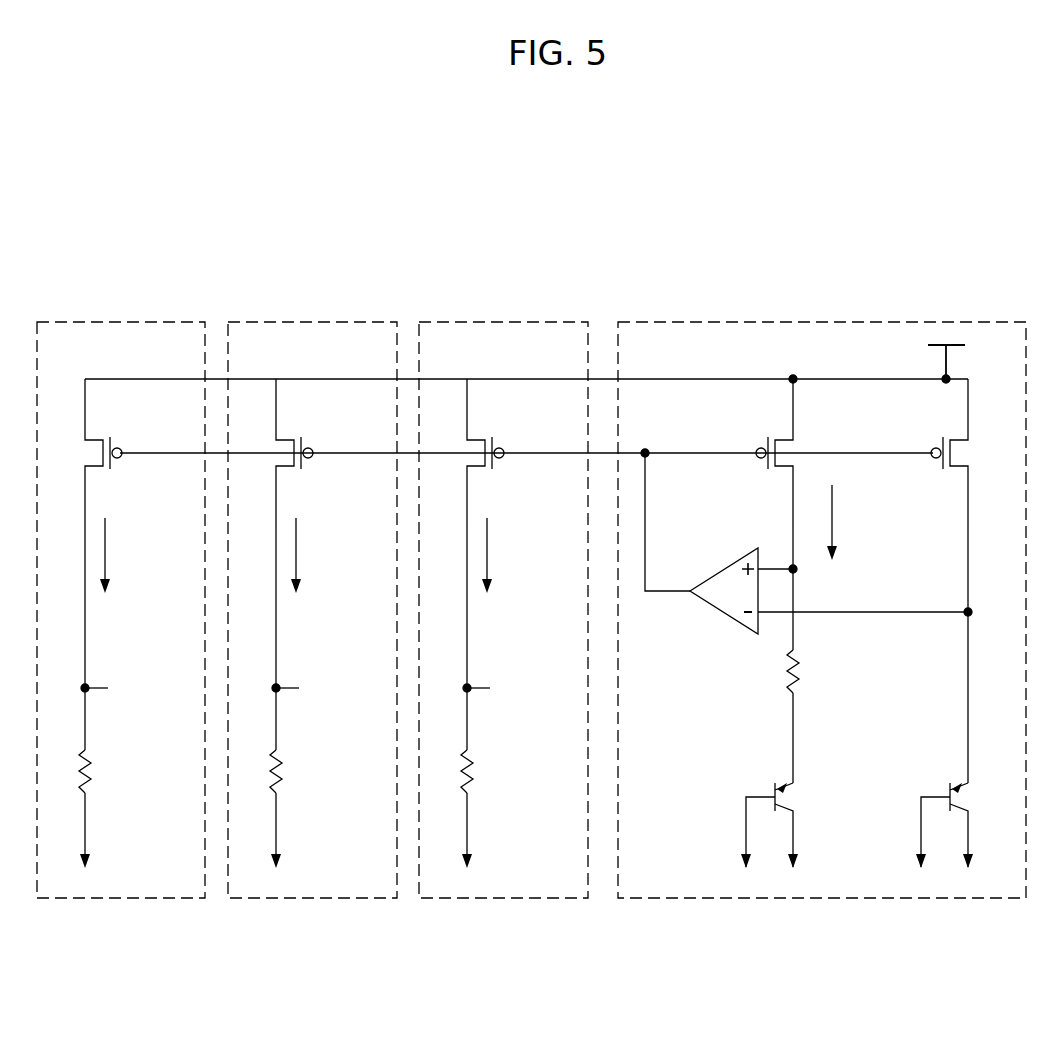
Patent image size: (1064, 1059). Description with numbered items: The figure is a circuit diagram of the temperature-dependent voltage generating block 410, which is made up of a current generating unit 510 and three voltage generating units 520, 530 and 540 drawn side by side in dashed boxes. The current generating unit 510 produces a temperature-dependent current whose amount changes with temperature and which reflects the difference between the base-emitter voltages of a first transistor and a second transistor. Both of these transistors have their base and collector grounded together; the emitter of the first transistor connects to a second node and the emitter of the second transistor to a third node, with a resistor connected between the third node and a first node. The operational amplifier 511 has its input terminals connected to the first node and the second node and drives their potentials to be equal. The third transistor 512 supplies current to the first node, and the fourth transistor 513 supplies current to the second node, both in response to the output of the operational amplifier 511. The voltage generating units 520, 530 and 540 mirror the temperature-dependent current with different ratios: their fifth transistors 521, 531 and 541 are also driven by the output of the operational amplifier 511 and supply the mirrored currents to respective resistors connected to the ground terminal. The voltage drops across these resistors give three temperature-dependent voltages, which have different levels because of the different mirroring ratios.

The temperature-dependent voltage generating block 410 is at (897, 237).
The current generating unit 510 is at (971, 322).
The operational amplifier 511 is at (722, 566).
The third transistor 512 is at (772, 453).
The fourth transistor 513 is at (948, 453).
The voltage generating unit 520 is at (532, 322).
The fifth transistor 521 is at (493, 453).
The voltage generating unit 530 is at (341, 322).
The fifth transistor 531 is at (301, 453).
The voltage generating unit 540 is at (150, 322).
The fifth transistor 541 is at (110, 453).